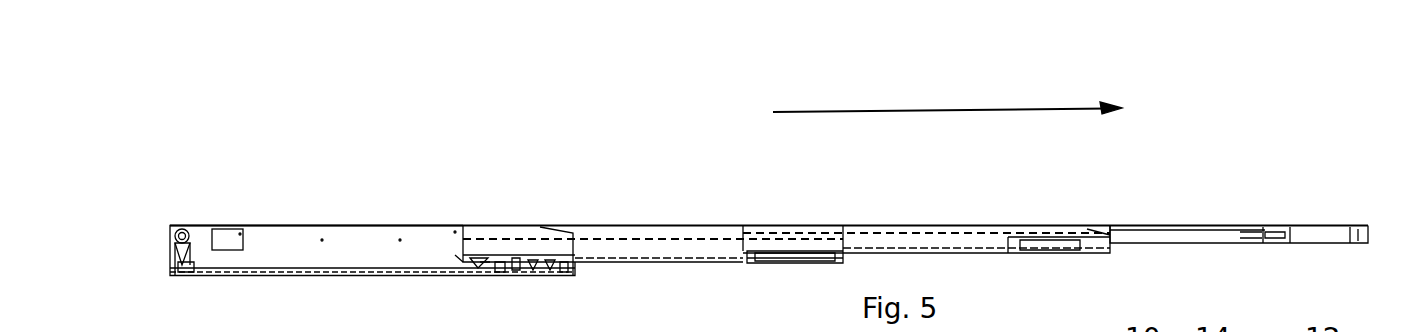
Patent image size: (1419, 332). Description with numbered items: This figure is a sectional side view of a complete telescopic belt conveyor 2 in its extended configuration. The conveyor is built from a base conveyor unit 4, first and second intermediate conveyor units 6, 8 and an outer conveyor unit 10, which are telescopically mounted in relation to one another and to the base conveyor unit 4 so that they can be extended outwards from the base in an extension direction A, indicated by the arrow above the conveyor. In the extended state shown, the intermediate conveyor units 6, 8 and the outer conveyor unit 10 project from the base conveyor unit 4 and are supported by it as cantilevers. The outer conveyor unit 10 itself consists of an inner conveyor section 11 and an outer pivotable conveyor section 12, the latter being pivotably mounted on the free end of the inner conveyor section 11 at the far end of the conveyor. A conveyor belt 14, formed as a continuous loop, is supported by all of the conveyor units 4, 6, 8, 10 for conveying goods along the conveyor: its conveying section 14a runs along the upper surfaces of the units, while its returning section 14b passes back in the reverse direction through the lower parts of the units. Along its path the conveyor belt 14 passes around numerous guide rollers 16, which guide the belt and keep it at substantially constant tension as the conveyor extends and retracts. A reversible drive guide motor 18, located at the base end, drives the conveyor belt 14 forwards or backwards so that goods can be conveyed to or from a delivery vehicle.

The telescopic belt conveyor 2 is at (698, 146).
The extension direction A is at (932, 111).
The base conveyor unit 4 is at (252, 238).
The first intermediate conveyor unit 6 is at (592, 232).
The second intermediate conveyor unit 8 is at (863, 232).
The outer conveyor unit 10 is at (1138, 232).
The inner conveyor section 11 is at (1183, 227).
The outer pivotable conveyor section 12 is at (1288, 227).
The conveyor belt 14 is at (398, 225).
The conveying section 14a is at (983, 232).
The returning section 14b is at (377, 270).
The guide rollers 16 is at (512, 268).
The reversible drive guide motor 18 is at (181, 272).